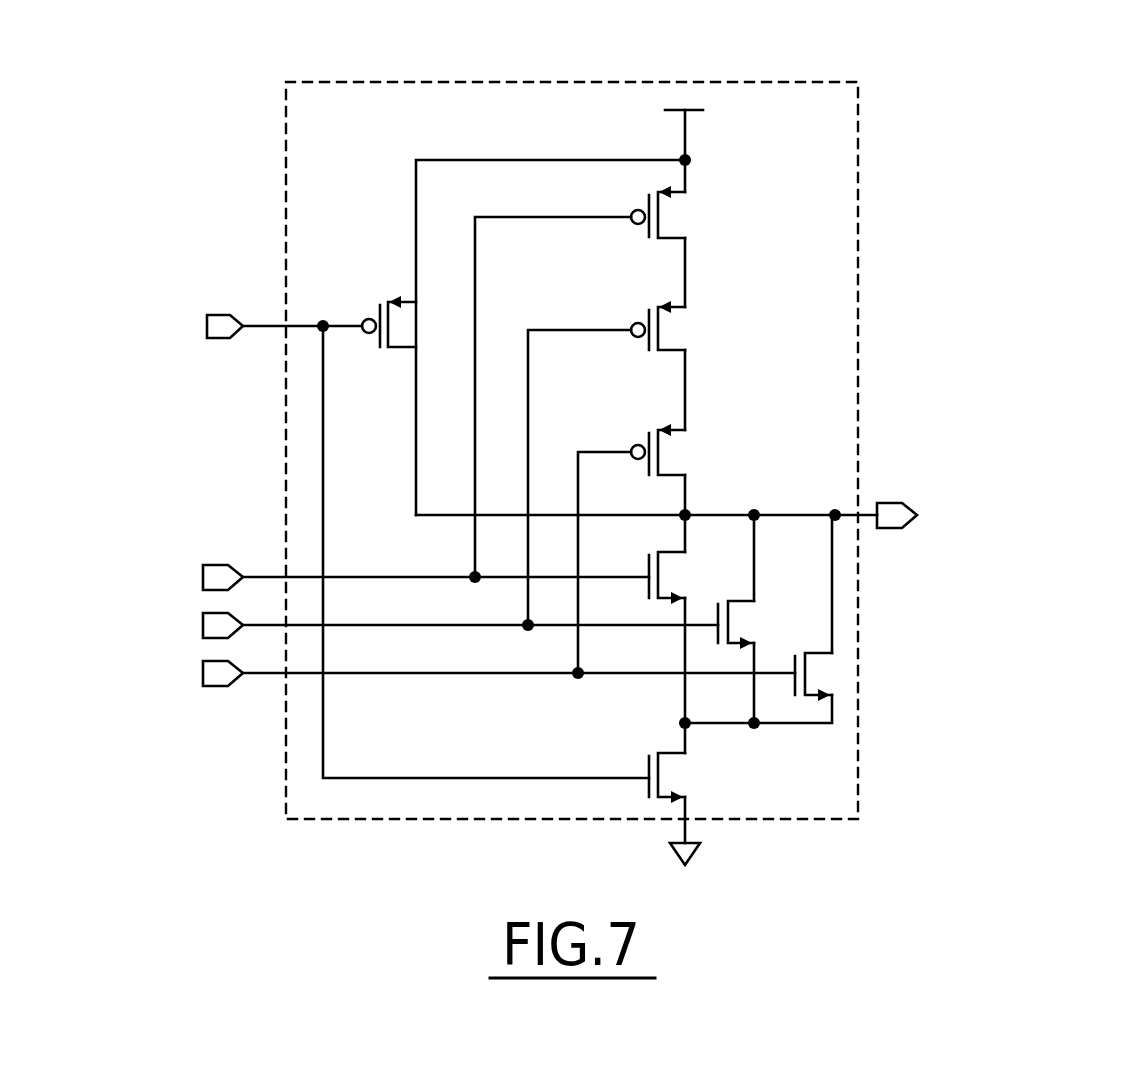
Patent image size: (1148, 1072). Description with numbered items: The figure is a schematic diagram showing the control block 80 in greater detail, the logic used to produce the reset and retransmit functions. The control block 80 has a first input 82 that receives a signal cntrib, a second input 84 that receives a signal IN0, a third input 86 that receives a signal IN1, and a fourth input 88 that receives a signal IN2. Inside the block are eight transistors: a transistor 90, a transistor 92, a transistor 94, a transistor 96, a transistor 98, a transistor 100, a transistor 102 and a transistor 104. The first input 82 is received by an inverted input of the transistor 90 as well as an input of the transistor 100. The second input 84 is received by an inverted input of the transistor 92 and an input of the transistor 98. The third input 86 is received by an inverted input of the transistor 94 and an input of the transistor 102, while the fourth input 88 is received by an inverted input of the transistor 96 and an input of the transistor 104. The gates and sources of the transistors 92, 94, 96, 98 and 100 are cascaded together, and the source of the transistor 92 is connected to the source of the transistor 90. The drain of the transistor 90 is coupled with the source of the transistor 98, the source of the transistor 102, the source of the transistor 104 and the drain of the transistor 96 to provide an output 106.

The control block 80 is at (467, 80).
The first input 82 is at (263, 320).
The second input 84 is at (265, 572).
The third input 86 is at (256, 628).
The fourth input 88 is at (262, 678).
The transistor 90 is at (410, 300).
The transistor 92 is at (680, 212).
The transistor 94 is at (680, 330).
The transistor 96 is at (680, 450).
The transistor 98 is at (676, 578).
The transistor 100 is at (676, 778).
The transistor 102 is at (748, 620).
The transistor 104 is at (825, 675).
The output 106 is at (866, 510).